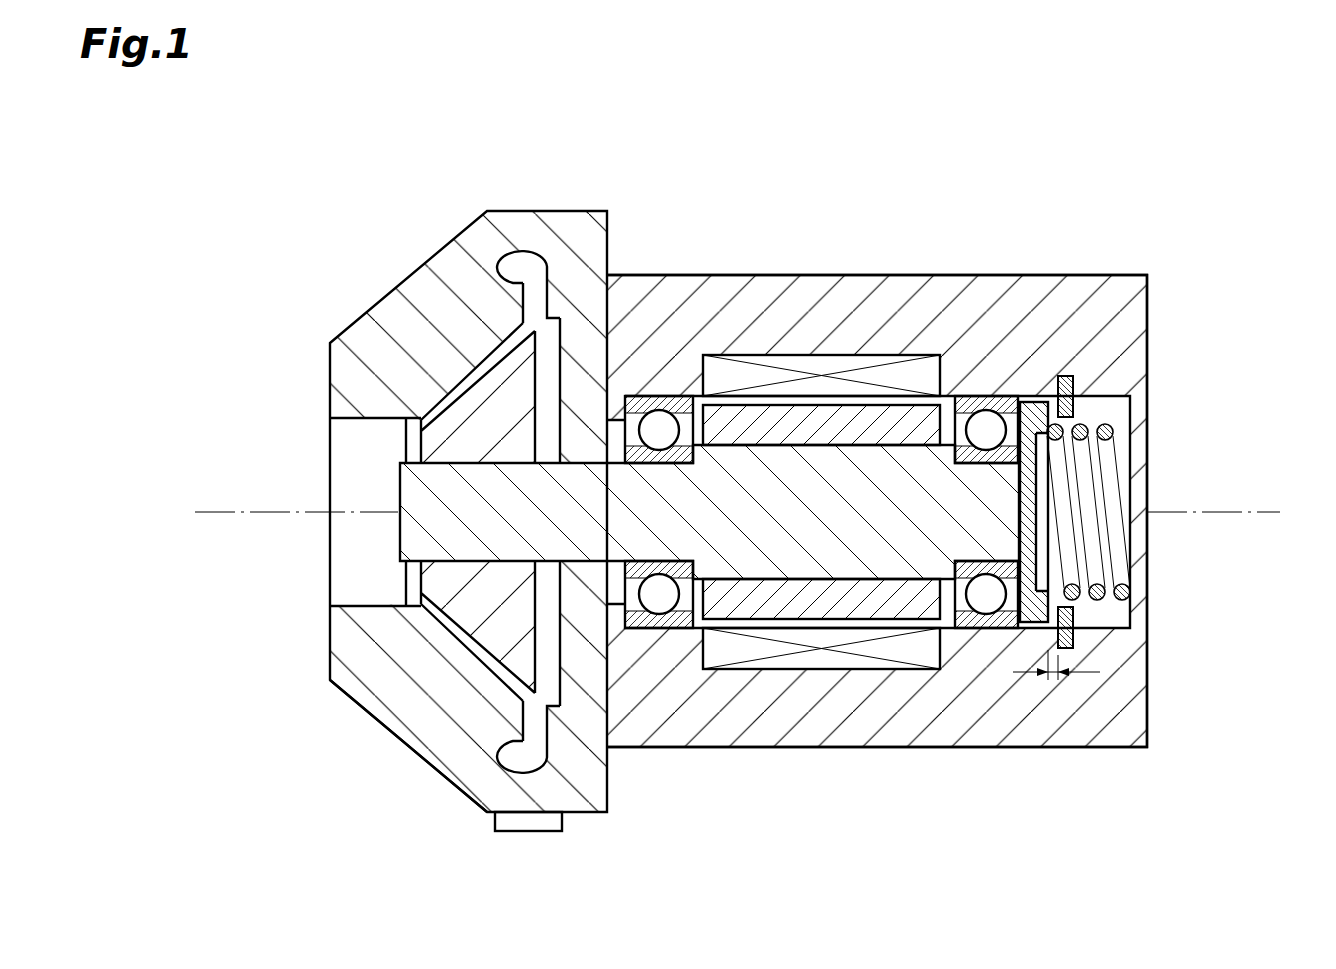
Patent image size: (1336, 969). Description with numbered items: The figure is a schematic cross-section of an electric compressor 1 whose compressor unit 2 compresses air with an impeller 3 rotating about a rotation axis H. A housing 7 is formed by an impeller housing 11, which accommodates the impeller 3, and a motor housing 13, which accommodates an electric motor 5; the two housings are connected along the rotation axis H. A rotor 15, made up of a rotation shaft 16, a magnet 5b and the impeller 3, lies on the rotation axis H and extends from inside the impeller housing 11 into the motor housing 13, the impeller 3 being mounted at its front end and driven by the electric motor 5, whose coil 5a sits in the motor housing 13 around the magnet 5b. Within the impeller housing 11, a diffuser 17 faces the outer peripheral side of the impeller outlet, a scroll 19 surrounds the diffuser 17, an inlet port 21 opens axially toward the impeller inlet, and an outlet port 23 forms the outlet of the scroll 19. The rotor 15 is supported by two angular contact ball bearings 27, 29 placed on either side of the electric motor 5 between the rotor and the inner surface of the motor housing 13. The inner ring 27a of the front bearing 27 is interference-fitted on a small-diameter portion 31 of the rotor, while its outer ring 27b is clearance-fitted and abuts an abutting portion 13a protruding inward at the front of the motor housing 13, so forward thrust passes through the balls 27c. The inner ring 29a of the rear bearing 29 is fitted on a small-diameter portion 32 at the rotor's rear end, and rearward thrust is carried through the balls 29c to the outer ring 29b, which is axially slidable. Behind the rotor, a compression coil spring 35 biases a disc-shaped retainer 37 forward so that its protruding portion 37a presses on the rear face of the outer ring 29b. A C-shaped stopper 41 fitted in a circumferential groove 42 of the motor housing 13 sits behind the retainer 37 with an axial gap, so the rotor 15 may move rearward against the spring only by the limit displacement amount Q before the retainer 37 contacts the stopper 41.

The electric compressor 1 is at (1245, 193).
The compressor unit 2 is at (447, 786).
The impeller 3 is at (418, 620).
The electric motor 5 is at (821, 412).
The coil 5a is at (800, 356).
The magnet 5b is at (850, 420).
The housing 7 is at (712, 880).
The impeller housing 11 is at (585, 802).
The motor housing 13 is at (673, 770).
The abutting portion 13a is at (612, 402).
The rotor 15 is at (806, 636).
The rotation shaft 16 is at (883, 555).
The diffuser 17 is at (518, 305).
The scroll 19 is at (522, 262).
The inlet port 21 is at (338, 553).
The outlet port 23 is at (522, 832).
The bearing 27 is at (632, 400).
The inner ring 27a is at (690, 448).
The outer ring 27b is at (652, 384).
The balls 27c is at (662, 425).
The bearing 29 is at (1005, 425).
The inner ring 29a is at (985, 410).
The outer ring 29b is at (998, 384).
The balls 29c is at (1035, 425).
The small-diameter portion 31 is at (660, 600).
The small-diameter portion 32 is at (985, 600).
The compression coil spring 35 is at (1095, 530).
The retainer 37 is at (1052, 490).
The protruding portion 37a is at (1030, 625).
The stopper 41 is at (1075, 432).
The groove 42 is at (1068, 380).
The rotation axis H is at (1245, 508).
The limit displacement amount Q is at (1056, 677).